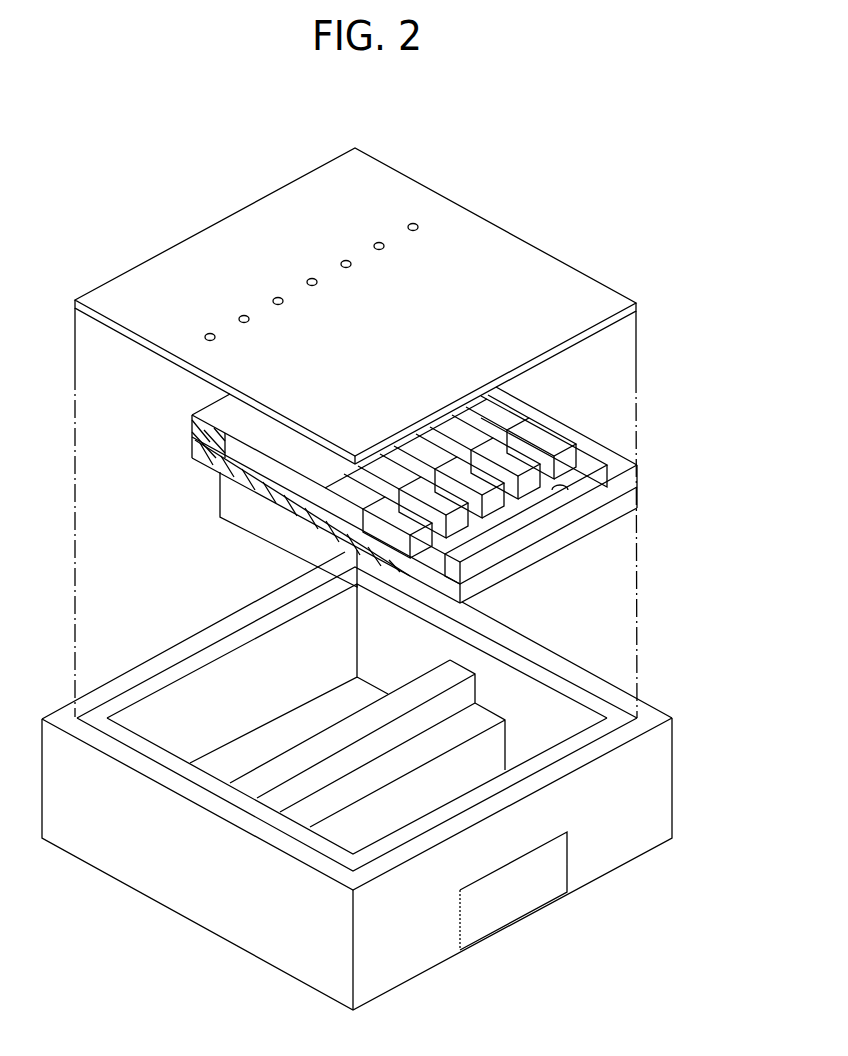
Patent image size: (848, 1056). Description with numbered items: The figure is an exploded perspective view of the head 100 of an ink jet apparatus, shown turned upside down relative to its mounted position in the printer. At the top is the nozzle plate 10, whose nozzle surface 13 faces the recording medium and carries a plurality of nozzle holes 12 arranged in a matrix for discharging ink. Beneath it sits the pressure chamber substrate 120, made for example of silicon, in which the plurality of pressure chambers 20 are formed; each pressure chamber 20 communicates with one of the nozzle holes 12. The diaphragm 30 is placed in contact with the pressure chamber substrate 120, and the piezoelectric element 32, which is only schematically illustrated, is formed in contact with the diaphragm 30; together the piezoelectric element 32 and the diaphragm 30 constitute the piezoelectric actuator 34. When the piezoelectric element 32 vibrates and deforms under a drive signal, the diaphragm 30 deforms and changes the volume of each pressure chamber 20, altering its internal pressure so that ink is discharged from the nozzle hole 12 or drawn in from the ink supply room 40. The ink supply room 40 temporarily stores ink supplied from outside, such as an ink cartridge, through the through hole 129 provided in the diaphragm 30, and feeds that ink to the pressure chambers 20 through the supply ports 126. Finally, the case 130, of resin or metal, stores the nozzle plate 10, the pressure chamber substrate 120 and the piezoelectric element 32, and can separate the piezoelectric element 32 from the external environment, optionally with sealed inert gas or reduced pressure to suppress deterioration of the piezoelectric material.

The head 100 is at (601, 124).
The nozzle plate 10 is at (517, 272).
The nozzle hole 12 is at (416, 222).
The nozzle surface 13 is at (558, 290).
The pressure chamber 20 is at (497, 425).
The diaphragm 30 is at (628, 508).
The piezoelectric element 32 is at (225, 502).
The piezoelectric actuator 34 is at (163, 573).
The ink supply room 40 is at (585, 463).
The pressure chamber substrate 120 is at (193, 420).
The supply port 126 is at (523, 450).
The through hole 129 is at (568, 490).
The case 130 is at (652, 712).